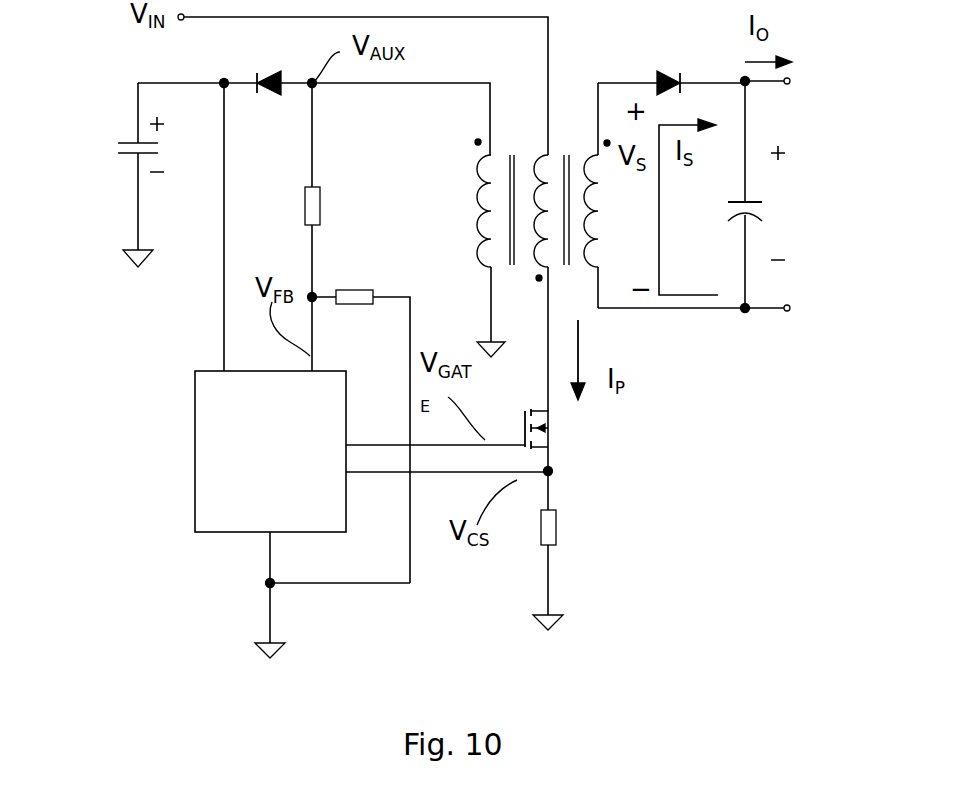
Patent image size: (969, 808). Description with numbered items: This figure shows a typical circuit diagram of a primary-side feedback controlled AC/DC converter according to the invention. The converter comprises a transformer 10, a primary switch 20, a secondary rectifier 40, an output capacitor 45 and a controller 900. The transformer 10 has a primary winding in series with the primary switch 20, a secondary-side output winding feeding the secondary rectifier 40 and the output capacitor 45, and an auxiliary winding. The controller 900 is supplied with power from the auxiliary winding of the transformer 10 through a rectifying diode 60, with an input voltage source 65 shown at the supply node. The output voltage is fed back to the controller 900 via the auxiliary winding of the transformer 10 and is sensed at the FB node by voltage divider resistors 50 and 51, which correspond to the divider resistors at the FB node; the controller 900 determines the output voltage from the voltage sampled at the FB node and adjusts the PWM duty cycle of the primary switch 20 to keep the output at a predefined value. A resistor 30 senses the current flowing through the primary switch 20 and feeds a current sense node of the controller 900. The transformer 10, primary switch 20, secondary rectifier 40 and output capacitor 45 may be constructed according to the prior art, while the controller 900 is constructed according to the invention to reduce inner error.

The transformer 10 is at (559, 120).
The primary switch 20 is at (556, 433).
The resistor 30 is at (560, 527).
The secondary rectifier 40 is at (678, 68).
The output capacitor 45 is at (770, 218).
The resistor R0 50 is at (327, 208).
The resistor R1 51 is at (365, 288).
The rectifying diode 60 is at (268, 98).
The input voltage source / capacitor 65 is at (118, 152).
The controller 900 is at (195, 393).